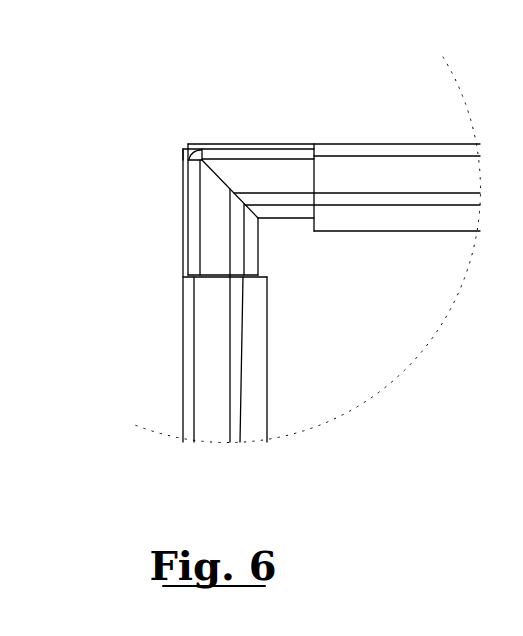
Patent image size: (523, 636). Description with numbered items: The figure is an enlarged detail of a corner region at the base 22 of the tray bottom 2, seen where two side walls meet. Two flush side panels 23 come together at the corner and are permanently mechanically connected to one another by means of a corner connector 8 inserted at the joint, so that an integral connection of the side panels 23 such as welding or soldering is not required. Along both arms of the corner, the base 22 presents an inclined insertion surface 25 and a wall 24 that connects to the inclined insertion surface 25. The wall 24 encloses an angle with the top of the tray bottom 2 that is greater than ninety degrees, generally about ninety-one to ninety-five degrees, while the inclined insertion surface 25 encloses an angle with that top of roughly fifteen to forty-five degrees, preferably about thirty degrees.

The tray bottom 2 is at (144, 143).
The corner connector 8 is at (228, 157).
The base 22 is at (365, 148).
The side panel 23 is at (260, 143).
The wall 24 is at (427, 232).
The inclined insertion surface 25 is at (345, 218).